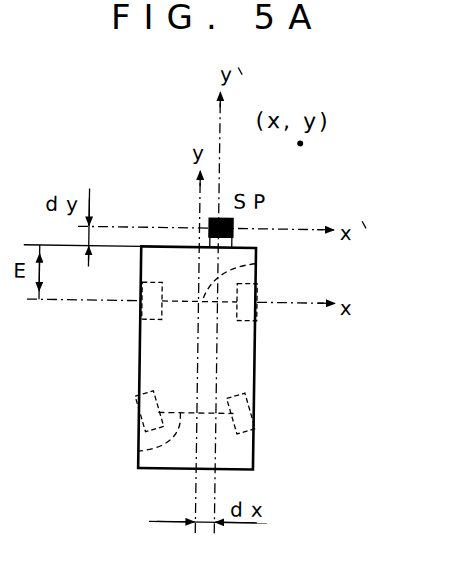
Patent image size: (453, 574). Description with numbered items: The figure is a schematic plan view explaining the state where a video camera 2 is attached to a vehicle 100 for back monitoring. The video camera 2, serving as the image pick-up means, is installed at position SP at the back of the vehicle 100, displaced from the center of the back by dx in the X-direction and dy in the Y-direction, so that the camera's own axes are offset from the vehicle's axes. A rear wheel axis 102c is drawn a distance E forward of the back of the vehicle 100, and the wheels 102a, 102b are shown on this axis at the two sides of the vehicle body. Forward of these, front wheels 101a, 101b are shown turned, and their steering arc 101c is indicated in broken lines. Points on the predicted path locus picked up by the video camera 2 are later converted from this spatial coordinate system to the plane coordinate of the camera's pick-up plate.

The video camera 2 is at (208, 222).
The vehicle 100 is at (254, 386).
The first positioning mark (rotated) 101a is at (135, 405).
The second positioning mark (rotated) 101b is at (258, 421).
The rotation path of positioning mark 101c is at (139, 452).
The first reference mark 102a is at (140, 311).
The second reference mark 102b is at (255, 313).
The rear wheel axis 102c is at (256, 263).